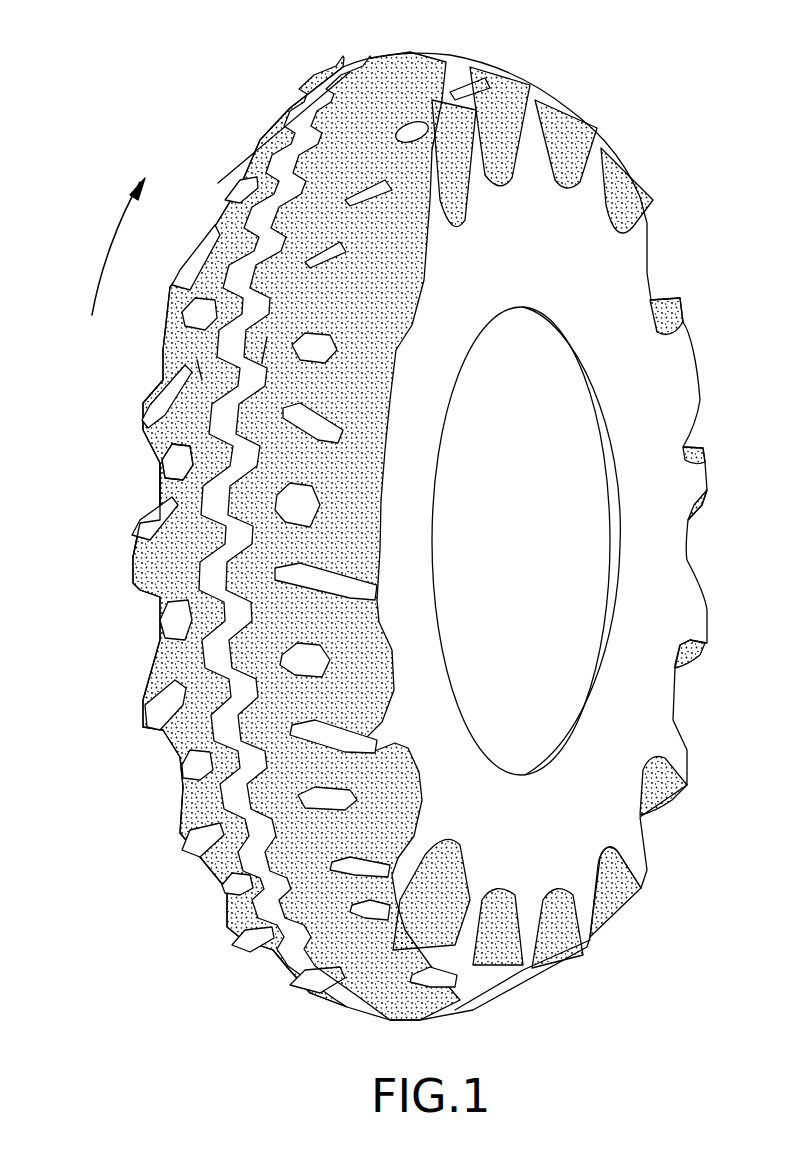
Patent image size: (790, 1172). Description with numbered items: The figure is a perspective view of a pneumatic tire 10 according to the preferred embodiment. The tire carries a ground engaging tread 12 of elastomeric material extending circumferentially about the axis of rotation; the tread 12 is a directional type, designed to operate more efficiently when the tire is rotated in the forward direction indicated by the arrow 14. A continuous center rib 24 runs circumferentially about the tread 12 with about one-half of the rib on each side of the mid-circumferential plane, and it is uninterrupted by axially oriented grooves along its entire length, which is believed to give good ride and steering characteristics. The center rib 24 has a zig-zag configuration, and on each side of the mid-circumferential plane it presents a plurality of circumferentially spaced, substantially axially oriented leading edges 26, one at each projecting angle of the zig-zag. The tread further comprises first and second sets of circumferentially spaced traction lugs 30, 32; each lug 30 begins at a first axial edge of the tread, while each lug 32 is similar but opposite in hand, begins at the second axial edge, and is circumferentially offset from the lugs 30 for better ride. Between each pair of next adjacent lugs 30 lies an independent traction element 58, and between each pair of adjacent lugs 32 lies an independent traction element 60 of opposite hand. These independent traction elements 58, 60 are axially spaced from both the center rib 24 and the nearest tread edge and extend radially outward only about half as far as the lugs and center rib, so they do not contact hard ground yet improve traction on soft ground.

The pneumatic tire 10 is at (640, 103).
The tread 12 is at (183, 497).
The arrow 14 is at (112, 243).
The center rib 24 is at (400, 56).
The leading edges 26 is at (202, 380).
The first set of traction lugs 30 is at (150, 410).
The second set of traction lugs 32 is at (350, 456).
The first set of independent traction elements 58 is at (173, 463).
The second set of independent traction elements 60 is at (328, 358).